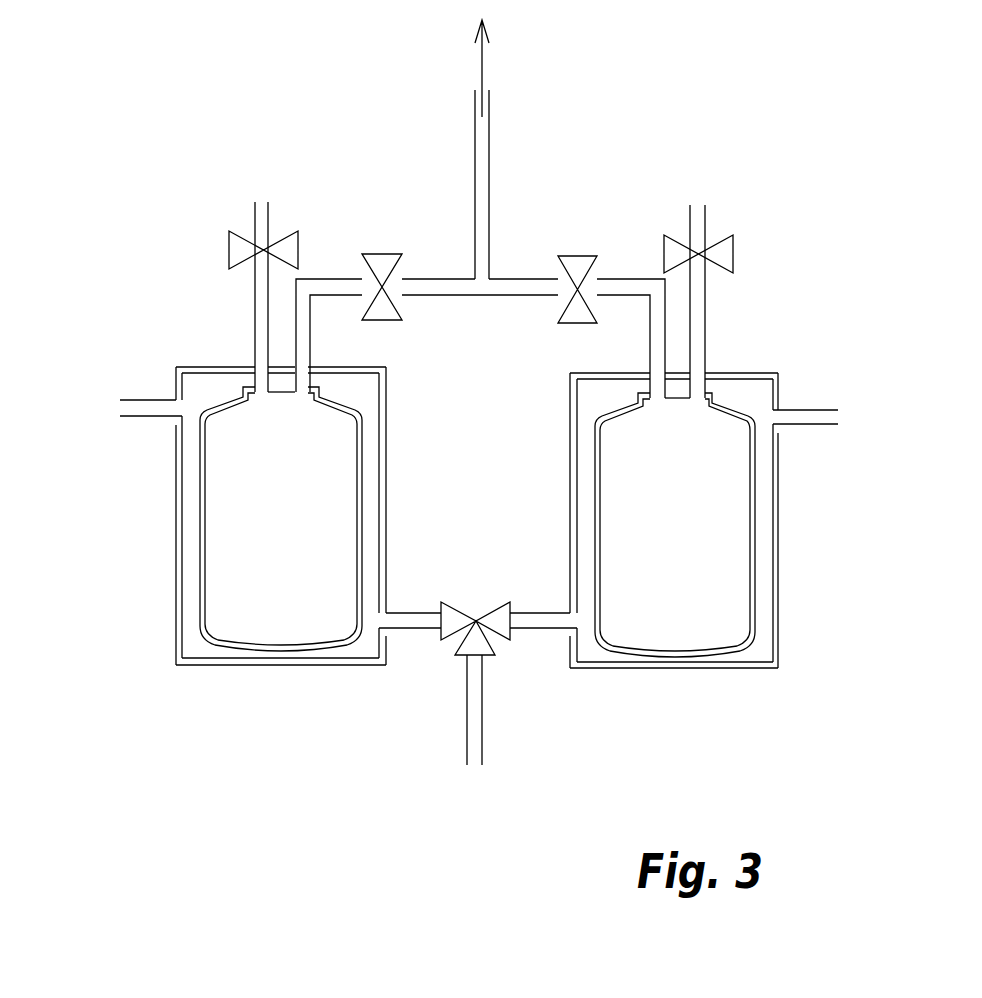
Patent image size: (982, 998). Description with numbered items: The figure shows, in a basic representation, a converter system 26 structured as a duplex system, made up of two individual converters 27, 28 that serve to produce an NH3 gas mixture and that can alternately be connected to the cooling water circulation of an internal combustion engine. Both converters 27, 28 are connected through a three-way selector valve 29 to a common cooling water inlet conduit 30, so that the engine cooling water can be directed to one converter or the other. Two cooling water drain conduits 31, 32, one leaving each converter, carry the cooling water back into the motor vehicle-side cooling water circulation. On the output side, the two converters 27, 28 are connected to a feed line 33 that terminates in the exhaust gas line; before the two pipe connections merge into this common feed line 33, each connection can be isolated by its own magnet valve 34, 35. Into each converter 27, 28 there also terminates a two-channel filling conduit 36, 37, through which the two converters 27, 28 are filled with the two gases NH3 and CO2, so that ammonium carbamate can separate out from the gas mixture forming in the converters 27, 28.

The converter system 26 is at (486, 449).
The converter 27 is at (172, 518).
The converter 28 is at (780, 527).
The three-way selector valve 29 is at (476, 614).
The cooling water inlet conduit 30 is at (468, 738).
The cooling water drain conduit 31 is at (152, 400).
The cooling water drain conduit 32 is at (818, 411).
The feed line 33 is at (491, 160).
The magnet valve 34 is at (385, 253).
The magnet valve 35 is at (576, 255).
The two-channel filling conduit 36 is at (252, 320).
The two-channel filling conduit 37 is at (708, 325).